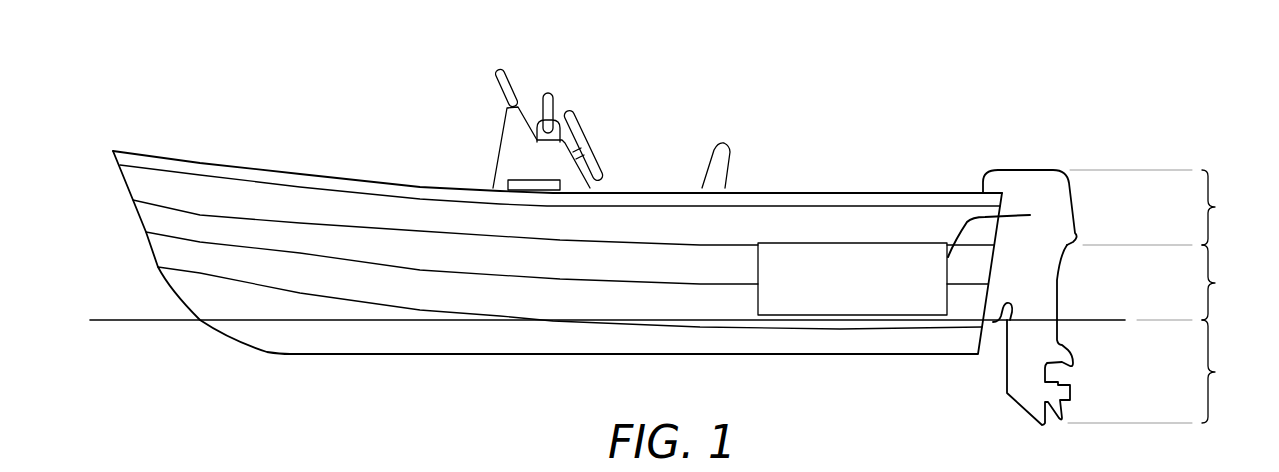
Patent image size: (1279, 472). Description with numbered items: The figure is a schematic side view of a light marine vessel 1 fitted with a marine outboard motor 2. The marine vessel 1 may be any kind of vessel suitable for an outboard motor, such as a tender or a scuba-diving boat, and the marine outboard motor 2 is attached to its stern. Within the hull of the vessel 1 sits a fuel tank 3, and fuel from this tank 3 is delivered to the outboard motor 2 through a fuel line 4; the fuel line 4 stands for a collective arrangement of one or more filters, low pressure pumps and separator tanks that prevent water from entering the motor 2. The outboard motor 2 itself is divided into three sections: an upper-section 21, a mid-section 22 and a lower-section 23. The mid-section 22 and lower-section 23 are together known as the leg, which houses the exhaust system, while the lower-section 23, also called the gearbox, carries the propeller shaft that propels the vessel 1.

The marine vessel 1 is at (290, 61).
The marine outboard motor 2 is at (1115, 273).
The fuel tank 3 is at (853, 303).
The fuel line 4 is at (967, 217).
The upper-section 21 is at (1115, 207).
The mid-section 22 is at (1152, 282).
The lower-section 23 is at (1120, 364).